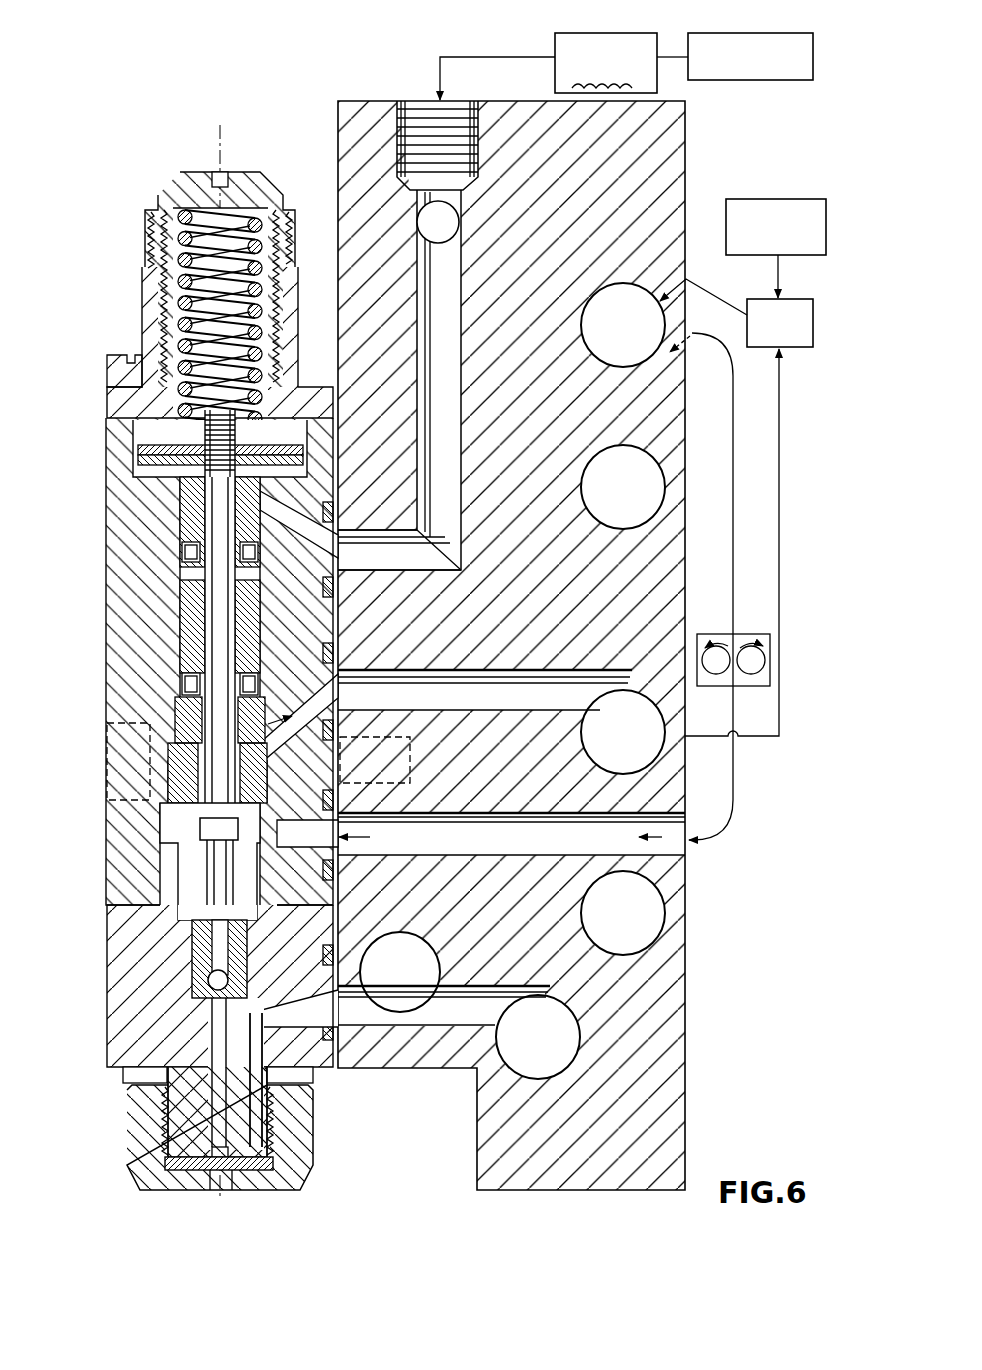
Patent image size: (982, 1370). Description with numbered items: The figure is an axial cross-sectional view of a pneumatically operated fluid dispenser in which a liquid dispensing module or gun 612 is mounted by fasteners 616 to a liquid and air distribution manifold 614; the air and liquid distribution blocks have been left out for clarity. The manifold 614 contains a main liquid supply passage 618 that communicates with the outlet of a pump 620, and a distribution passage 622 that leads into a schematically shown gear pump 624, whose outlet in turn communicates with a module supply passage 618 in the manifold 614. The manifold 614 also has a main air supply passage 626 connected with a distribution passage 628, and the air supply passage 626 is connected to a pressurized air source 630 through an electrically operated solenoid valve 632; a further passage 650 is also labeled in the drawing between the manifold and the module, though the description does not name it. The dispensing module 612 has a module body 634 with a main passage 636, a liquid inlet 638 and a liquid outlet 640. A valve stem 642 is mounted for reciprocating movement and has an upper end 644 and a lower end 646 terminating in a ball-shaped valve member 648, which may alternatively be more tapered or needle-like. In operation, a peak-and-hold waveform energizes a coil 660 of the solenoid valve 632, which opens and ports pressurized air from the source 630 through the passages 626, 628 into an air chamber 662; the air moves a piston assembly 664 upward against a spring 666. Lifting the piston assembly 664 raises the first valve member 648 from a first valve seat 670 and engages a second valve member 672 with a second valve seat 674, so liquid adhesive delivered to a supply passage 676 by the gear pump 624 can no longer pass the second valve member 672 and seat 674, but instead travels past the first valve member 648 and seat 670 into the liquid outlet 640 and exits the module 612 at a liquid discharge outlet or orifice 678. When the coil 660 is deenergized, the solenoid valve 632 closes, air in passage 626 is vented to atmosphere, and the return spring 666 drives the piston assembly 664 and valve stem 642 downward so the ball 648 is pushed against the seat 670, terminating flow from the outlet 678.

The liquid dispensing module 612 is at (103, 296).
The liquid and air distribution manifold 614 is at (484, 84).
The fasteners 616 is at (107, 750).
The main liquid supply passage 618 is at (638, 340).
The pump 620 is at (797, 299).
The distribution passage 622 is at (712, 372).
The gear pump 624 is at (744, 687).
The main air supply passage 626 is at (457, 222).
The distribution passage 628 is at (445, 284).
The pressurized air source 630 is at (735, 33).
The solenoid valve 632 is at (602, 33).
The module body 634 is at (106, 650).
The main passage 636 is at (196, 911).
The liquid inlet 638 is at (333, 813).
The liquid outlet 640 is at (216, 1068).
The valve stem 642 is at (208, 568).
The upper end 644 is at (178, 520).
The lower end 646 is at (192, 976).
The valve member 648 is at (208, 984).
The air passage 650 is at (340, 553).
The coil 660 is at (575, 86).
The air chamber 662 is at (137, 457).
The piston assembly 664 is at (150, 441).
The spring 666 is at (185, 178).
The first valve seat 670 is at (249, 1008).
The second valve member 672 is at (200, 829).
The second valve seat 674 is at (200, 798).
The supply passage 676 is at (540, 853).
The liquid discharge outlet 678 is at (232, 1172).